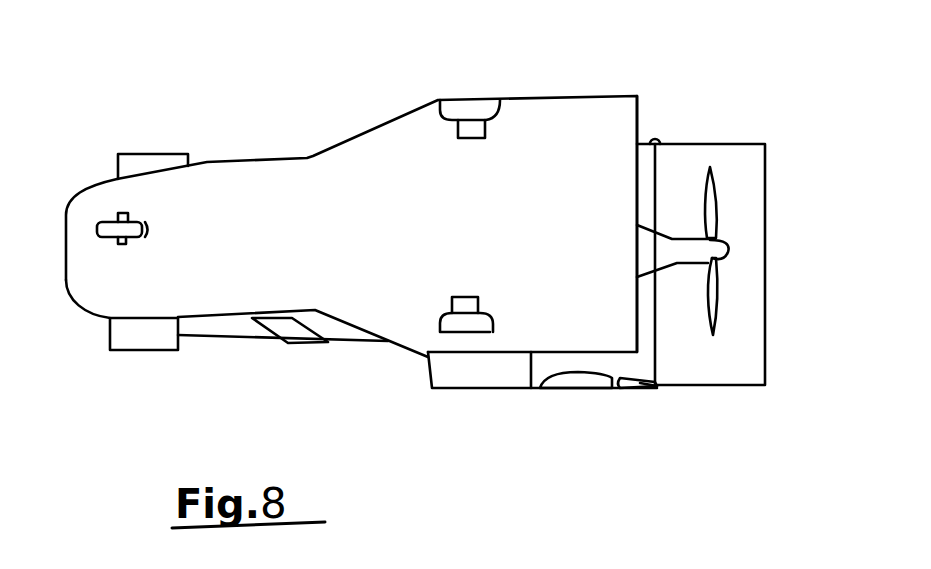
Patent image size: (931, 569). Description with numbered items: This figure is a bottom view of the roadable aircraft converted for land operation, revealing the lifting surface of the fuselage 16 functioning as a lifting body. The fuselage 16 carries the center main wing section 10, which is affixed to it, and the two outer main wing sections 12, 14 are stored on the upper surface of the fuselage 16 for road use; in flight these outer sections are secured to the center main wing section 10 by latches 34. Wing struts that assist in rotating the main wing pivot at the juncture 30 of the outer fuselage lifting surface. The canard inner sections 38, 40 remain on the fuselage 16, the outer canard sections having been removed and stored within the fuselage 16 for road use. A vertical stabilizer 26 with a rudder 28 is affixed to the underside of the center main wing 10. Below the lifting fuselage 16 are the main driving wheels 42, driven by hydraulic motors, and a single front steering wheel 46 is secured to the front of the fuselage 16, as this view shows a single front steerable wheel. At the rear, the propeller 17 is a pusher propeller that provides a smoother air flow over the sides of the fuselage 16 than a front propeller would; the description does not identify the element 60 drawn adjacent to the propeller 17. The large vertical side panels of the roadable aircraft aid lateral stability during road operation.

The center main wing section 10 is at (588, 357).
The outer main wing section 12 is at (512, 370).
The outer main wing section 14 is at (708, 360).
The fuselage 16 is at (388, 258).
The propeller 17 is at (713, 218).
The vertical stabilizer 26 is at (595, 390).
The rudder 28 is at (632, 388).
The juncture 30 is at (655, 383).
The latch 34 is at (660, 133).
The canard inner section 38 is at (152, 167).
The canard inner section 40 is at (138, 334).
The main driving wheel 42 is at (485, 113).
The front steering wheel 46 is at (112, 232).
The drive shaft 60 is at (670, 250).